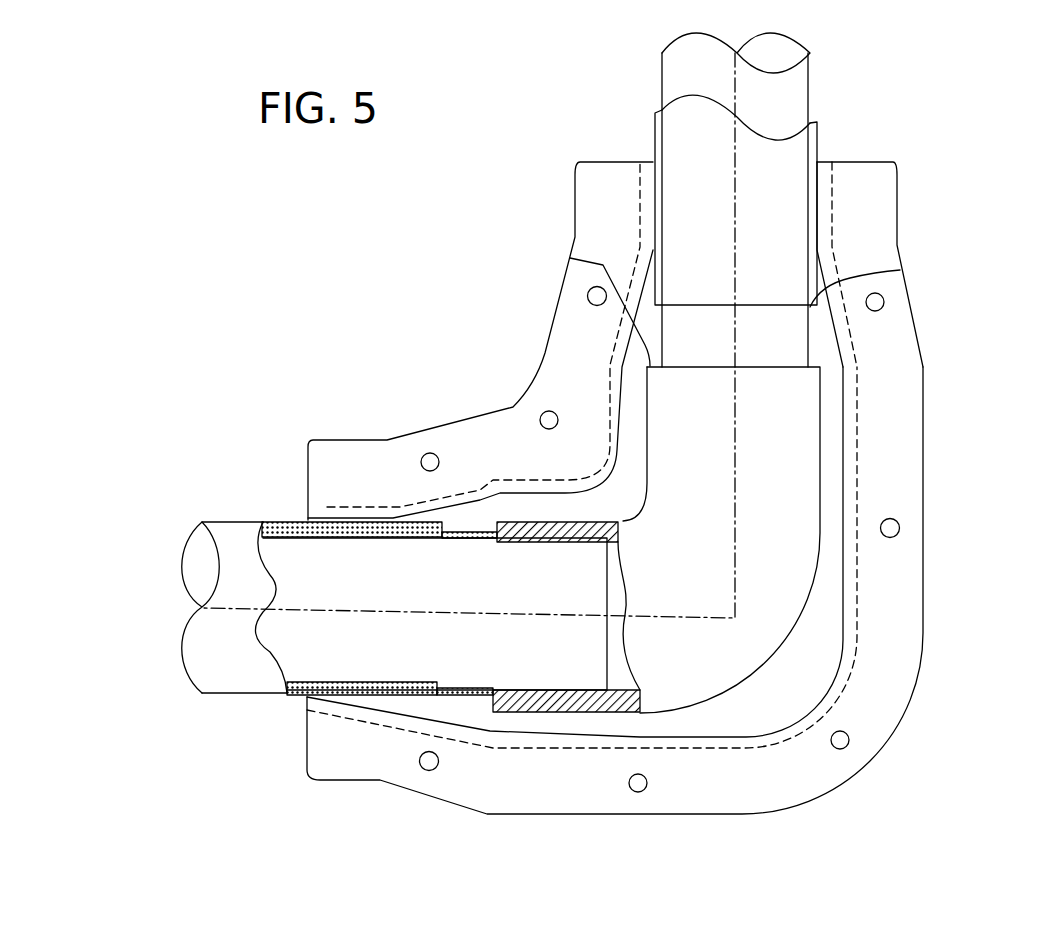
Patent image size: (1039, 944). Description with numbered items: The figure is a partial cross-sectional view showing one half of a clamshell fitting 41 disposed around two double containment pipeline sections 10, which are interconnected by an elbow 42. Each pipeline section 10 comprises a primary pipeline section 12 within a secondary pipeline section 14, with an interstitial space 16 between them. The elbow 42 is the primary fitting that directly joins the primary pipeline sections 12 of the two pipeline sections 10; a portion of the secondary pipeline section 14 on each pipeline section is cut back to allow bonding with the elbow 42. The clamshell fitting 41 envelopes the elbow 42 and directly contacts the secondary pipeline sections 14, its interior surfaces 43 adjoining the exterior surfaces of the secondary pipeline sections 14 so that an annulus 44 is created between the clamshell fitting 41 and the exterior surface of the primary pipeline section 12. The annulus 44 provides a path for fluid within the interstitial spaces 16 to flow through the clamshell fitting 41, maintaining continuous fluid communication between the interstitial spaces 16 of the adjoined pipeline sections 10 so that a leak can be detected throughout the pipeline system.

The pipeline section 10 is at (596, 372).
The primary pipeline section 12 is at (478, 535).
The secondary pipeline section 14 is at (303, 515).
The interstitial space 16 is at (440, 523).
The clamshell fitting 41 is at (516, 360).
The elbow 42 is at (778, 597).
The interior surface 43 is at (657, 737).
The annulus 44 is at (572, 258).